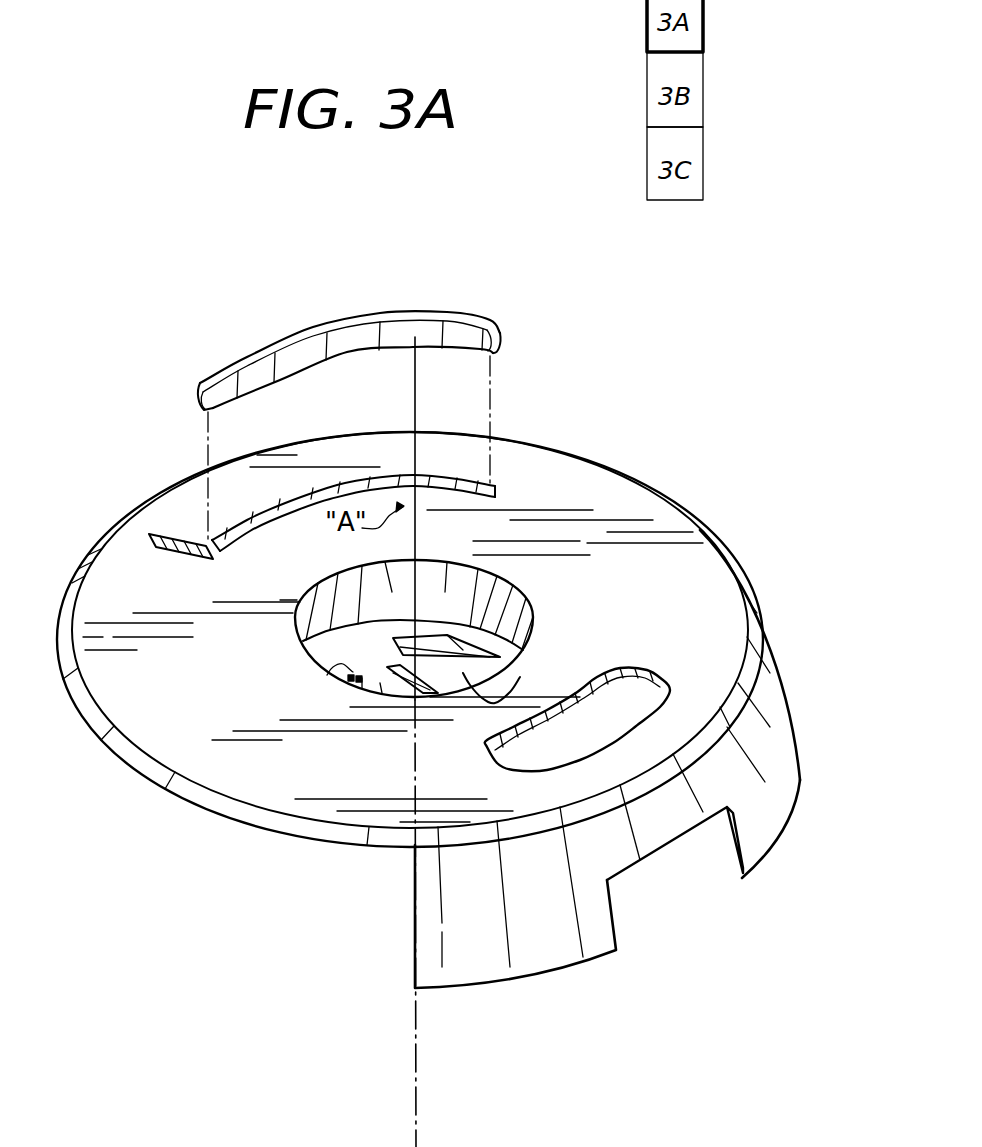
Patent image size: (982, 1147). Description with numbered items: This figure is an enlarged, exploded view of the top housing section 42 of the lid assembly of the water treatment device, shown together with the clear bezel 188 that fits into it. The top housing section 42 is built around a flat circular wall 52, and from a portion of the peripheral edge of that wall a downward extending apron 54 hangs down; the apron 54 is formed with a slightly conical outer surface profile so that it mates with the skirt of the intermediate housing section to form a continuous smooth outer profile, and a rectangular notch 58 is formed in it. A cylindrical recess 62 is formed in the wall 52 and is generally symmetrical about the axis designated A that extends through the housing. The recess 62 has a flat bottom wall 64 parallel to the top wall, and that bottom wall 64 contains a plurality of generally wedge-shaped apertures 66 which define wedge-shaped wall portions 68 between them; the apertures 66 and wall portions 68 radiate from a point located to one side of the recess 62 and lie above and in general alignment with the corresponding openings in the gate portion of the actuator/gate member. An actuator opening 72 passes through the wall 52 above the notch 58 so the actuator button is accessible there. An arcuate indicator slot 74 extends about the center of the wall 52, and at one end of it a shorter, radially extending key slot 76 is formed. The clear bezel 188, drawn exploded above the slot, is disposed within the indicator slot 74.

The top housing section 42 is at (750, 554).
The flat circular wall 52 is at (598, 497).
The apron 54 is at (732, 759).
The rectangular notch 58 is at (672, 890).
The cylindrical recess 62 is at (432, 604).
The flat bottom wall 64 is at (343, 607).
The wedge-shaped apertures 66 is at (497, 580).
The wedge-shaped wall portions 68 is at (510, 700).
The actuator opening 72 is at (656, 589).
The indicator slot 74 is at (327, 490).
The key slot 76 is at (170, 531).
The clear bezel 188 is at (263, 357).